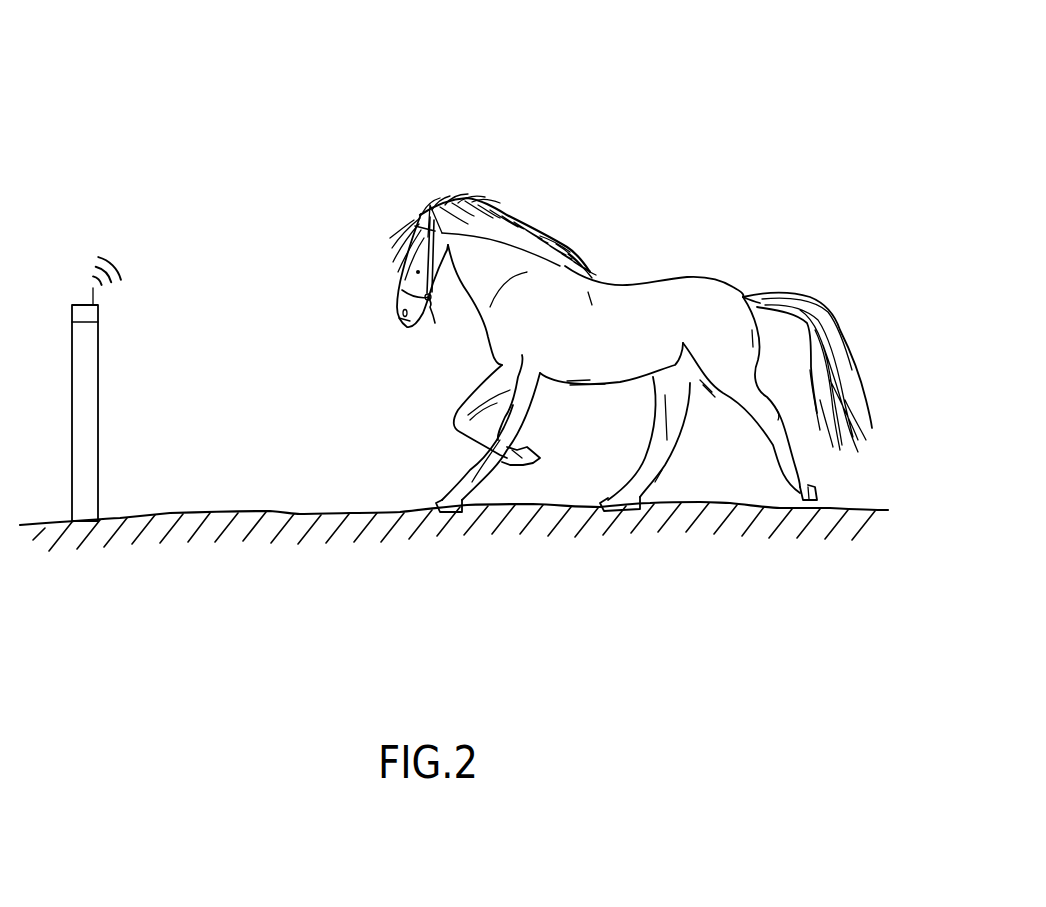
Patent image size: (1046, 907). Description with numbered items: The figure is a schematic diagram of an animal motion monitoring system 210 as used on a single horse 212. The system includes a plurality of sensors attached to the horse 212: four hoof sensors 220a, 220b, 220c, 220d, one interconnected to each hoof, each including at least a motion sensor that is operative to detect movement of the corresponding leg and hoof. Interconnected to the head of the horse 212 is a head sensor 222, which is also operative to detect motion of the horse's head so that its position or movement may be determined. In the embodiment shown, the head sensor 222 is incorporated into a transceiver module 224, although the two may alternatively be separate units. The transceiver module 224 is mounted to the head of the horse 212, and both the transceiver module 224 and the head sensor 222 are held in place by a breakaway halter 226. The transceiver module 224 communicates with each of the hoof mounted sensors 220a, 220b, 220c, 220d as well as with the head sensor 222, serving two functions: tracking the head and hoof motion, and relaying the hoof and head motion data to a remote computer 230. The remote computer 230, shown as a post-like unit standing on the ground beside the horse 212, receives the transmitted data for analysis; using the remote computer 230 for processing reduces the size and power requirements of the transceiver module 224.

The animal motion monitoring system 210 is at (616, 114).
The horse 212 is at (646, 282).
The head sensor 222 is at (480, 222).
The transceiver module 224 is at (438, 227).
The breakaway halter 226 is at (430, 307).
The remote computer 230 is at (80, 303).
The hoof sensor 220a is at (438, 502).
The hoof sensor 220b is at (540, 457).
The hoof sensor 220c is at (600, 503).
The hoof sensor 220d is at (817, 495).